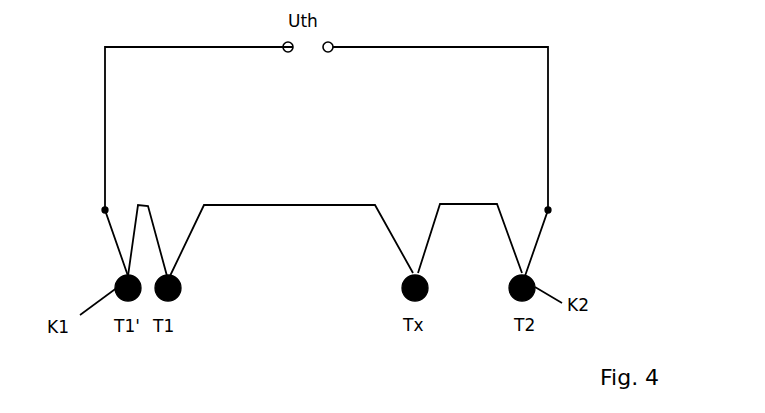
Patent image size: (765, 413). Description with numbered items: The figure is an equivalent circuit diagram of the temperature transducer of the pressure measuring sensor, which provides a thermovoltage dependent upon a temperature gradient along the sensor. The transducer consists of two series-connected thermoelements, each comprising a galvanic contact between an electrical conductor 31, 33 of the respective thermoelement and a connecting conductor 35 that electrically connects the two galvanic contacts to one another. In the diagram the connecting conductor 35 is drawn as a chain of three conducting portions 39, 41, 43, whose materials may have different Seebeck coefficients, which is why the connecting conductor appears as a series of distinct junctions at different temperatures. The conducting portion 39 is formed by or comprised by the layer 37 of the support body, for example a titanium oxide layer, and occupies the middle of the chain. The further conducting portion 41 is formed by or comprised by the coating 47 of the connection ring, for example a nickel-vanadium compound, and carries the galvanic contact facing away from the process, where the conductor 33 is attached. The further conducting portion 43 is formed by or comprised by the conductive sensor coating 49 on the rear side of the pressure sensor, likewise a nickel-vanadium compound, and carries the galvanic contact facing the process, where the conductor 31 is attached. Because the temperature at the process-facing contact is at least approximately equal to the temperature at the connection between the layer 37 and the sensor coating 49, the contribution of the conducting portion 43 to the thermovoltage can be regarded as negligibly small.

The electrical conductor 31 is at (116, 243).
The electrical conductor 33 is at (540, 240).
The connecting conductor 35 is at (325, 188).
The layer 37 is at (306, 186).
The conducting portion 39 is at (291, 220).
The further conducting portion 41 is at (470, 219).
The further conducting portion 43 is at (171, 220).
The coating 47 is at (470, 219).
The sensor coating 49 is at (148, 206).